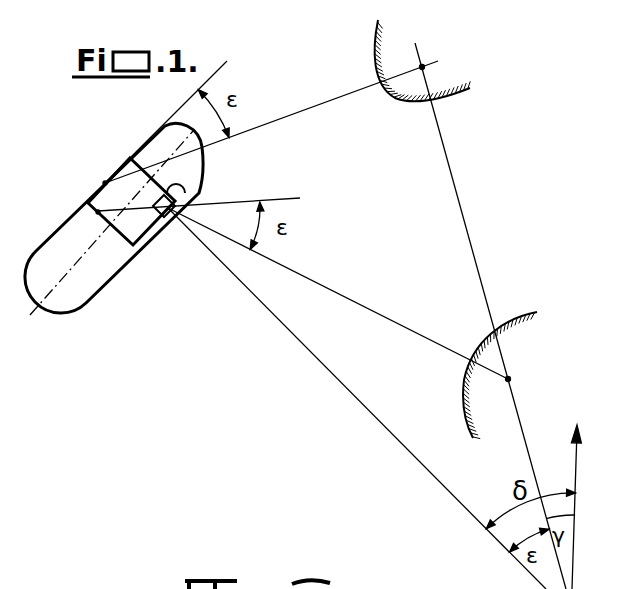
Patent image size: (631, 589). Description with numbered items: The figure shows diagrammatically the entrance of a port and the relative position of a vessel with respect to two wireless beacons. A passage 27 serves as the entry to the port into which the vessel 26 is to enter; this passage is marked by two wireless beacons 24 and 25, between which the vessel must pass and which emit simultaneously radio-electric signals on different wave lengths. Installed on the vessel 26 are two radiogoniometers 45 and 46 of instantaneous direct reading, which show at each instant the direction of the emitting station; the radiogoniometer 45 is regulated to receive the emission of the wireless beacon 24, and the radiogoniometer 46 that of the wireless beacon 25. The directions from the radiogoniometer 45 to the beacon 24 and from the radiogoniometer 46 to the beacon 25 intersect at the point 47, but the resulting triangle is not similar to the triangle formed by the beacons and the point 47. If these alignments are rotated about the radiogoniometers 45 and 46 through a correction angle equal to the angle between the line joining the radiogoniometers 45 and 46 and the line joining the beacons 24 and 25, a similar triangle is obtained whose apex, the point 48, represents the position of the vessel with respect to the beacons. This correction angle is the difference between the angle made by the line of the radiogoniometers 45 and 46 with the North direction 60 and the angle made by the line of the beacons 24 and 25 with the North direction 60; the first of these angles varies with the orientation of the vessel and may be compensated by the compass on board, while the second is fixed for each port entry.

The wireless beacon 24 is at (422, 67).
The wireless beacon 25 is at (508, 379).
The vessel 26 is at (77, 297).
The passage 27 is at (490, 316).
The radiogoniometer 45 is at (130, 175).
The radiogoniometer 46 is at (186, 191).
The point of intersection 47 is at (105, 183).
The point of intersection 48 is at (98, 212).
The North direction 60 is at (575, 463).